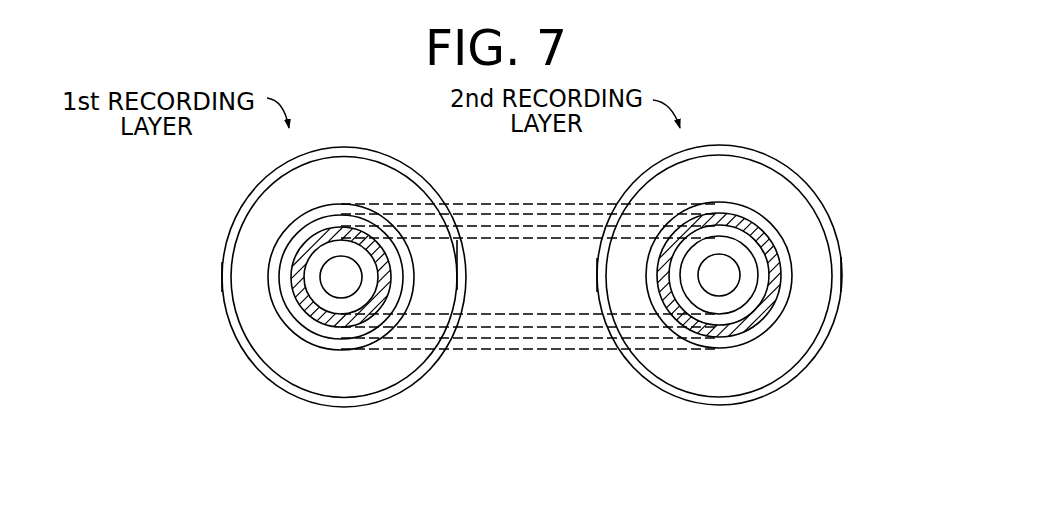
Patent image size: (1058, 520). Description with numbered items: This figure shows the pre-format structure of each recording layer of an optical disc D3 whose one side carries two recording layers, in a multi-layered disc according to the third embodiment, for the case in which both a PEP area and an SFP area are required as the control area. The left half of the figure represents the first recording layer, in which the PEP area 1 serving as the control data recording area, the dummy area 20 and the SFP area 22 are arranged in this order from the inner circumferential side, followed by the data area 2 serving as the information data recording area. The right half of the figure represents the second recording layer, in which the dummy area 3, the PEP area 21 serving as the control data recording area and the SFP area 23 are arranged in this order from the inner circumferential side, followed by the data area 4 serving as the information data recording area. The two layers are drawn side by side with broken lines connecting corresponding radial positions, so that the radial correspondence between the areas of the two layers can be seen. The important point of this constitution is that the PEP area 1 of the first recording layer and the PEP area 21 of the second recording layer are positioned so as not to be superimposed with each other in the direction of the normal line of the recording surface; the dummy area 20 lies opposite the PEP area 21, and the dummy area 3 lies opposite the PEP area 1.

The PEP area 1 is at (327, 317).
The data area 2 is at (238, 245).
The dummy area 3 is at (743, 318).
The data area 4 is at (807, 242).
The dummy area 20 is at (290, 288).
The PEP area 21 is at (773, 282).
The SFP area 22 is at (290, 320).
The SFP area 23 is at (747, 213).
The optical disc D3 is at (425, 133).